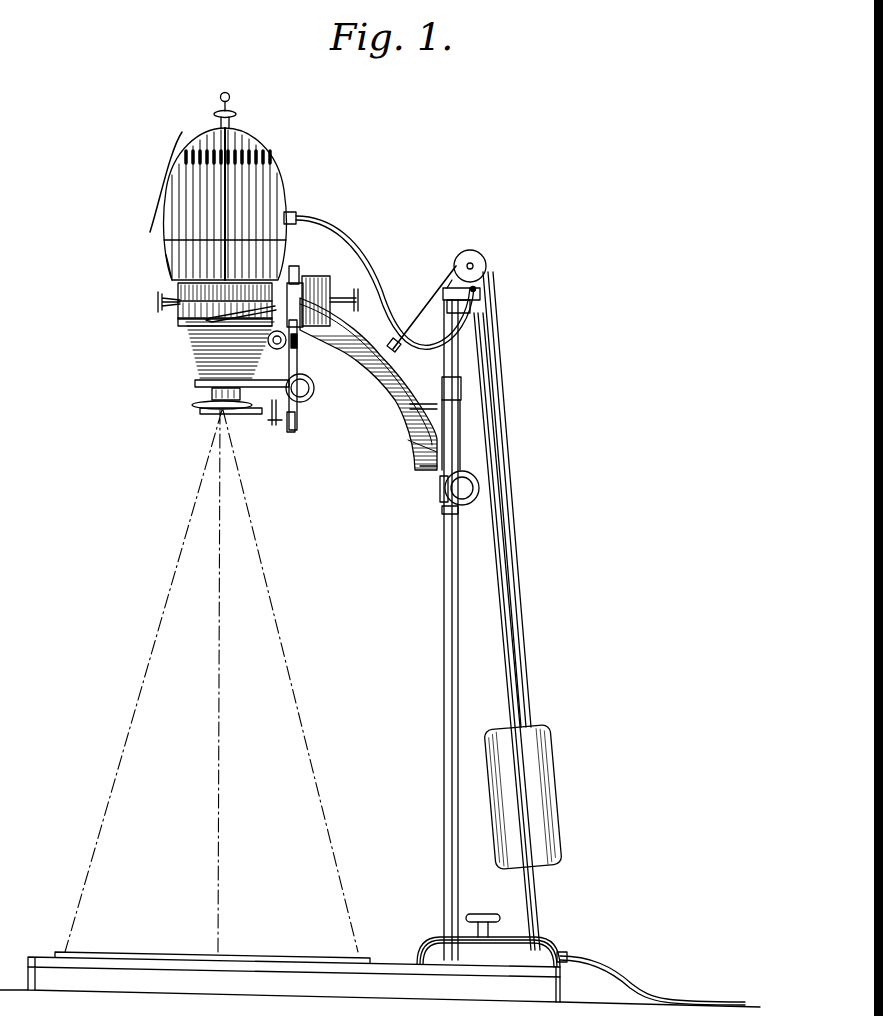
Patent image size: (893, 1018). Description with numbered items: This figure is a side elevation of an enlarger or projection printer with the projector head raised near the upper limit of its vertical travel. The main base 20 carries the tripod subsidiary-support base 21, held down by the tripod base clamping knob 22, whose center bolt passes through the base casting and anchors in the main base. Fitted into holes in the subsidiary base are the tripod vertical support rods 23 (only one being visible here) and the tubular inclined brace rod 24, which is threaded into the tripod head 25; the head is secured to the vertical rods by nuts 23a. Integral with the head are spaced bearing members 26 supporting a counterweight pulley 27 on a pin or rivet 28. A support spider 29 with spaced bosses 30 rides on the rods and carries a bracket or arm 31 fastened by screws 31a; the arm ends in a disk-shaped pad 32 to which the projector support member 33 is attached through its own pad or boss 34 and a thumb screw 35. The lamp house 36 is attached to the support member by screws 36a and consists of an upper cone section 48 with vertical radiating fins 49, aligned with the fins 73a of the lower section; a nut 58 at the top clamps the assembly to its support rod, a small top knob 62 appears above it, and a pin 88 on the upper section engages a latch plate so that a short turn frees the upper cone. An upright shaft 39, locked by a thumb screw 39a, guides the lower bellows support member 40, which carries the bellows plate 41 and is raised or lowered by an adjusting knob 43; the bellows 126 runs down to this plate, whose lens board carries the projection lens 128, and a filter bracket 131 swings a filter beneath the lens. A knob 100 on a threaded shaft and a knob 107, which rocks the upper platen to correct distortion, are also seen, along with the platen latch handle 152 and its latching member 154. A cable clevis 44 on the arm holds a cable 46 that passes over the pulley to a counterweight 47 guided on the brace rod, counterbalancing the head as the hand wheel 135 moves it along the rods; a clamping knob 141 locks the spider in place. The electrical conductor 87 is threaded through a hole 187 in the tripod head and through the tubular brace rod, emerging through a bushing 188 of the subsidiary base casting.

The main base 20 is at (221, 987).
The tripod subsidiary-support base 21 is at (430, 946).
The tripod base clamping knob 22 is at (484, 913).
The tripod vertical support rod 23 is at (444, 562).
The nut 23a is at (448, 286).
The tripod inclined brace rod 24 is at (512, 665).
The tripod head 25 is at (452, 306).
The bearing member 26 is at (458, 276).
The counterweight pulley 27 is at (487, 268).
The pin or rivet 28 is at (471, 263).
The support spider 29 is at (450, 435).
The boss 30 is at (461, 390).
The bracket or arm 31 is at (414, 449).
The screw 31a is at (412, 408).
The enlarged end or pad 32 is at (322, 280).
The projector support member 33 is at (300, 283).
The pad or boss 34 is at (352, 360).
The thumb screw 35 is at (348, 297).
The lamp house 36 is at (202, 223).
The screw 36a is at (296, 266).
The upright shaft 39 is at (295, 430).
The thumb screw 39a is at (296, 350).
The lower bellows support member 40 is at (274, 425).
The bellows plate 41 is at (195, 383).
The adjusting knob 43 is at (311, 399).
The cable clevis 44 is at (402, 350).
The cable 46 is at (508, 478).
The counterweight 47 is at (544, 808).
The upper cone or section 48 is at (258, 184).
The vertical radiating fin 49 is at (250, 142).
The nut 58 is at (237, 113).
The knob 62 is at (229, 96).
The vertical radiating fin 73a is at (166, 258).
The electrical conductor 87 is at (338, 240).
The pin 88 is at (297, 217).
The knob 100 is at (276, 350).
The knob 107 is at (156, 303).
The bellows 126 is at (208, 348).
The projection lens 128 is at (212, 396).
The filter bracket 131 is at (252, 416).
The hand wheel 135 is at (480, 496).
The clamping knob 141 is at (442, 494).
The handle 152 is at (178, 318).
The latching member 154 is at (186, 328).
The hole 187 is at (478, 290).
The bushing 188 is at (562, 956).